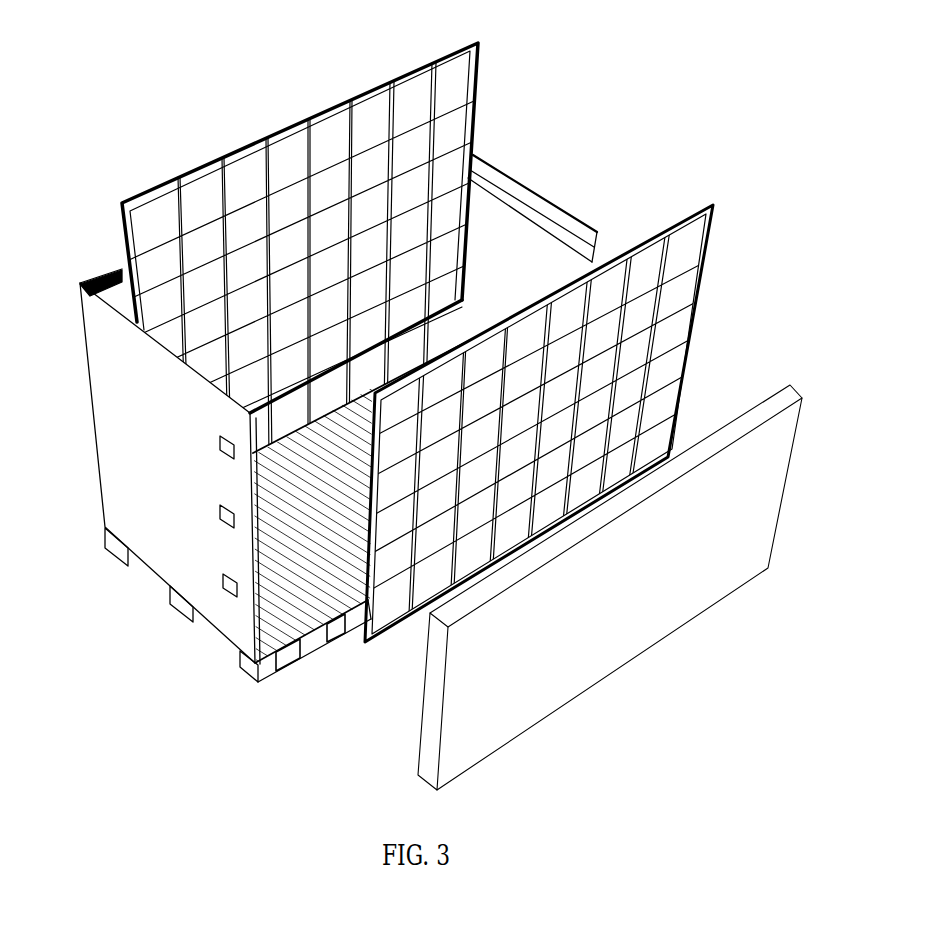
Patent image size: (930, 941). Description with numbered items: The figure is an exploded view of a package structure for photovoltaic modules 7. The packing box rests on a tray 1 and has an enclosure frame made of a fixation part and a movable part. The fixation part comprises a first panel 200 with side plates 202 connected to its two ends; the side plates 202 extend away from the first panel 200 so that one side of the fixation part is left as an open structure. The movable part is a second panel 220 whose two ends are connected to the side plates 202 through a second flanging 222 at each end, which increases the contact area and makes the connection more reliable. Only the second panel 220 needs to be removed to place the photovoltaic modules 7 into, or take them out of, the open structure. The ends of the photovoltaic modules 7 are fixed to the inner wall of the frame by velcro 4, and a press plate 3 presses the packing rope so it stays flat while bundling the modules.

The first panel 200 is at (100, 277).
The side plates 202 is at (118, 438).
The photovoltaic modules 7 is at (448, 123).
The velcro 4 is at (230, 590).
The tray 1 is at (178, 605).
The press plate 3 is at (290, 623).
The second panel 220 is at (640, 618).
The second flanging 222 is at (433, 720).